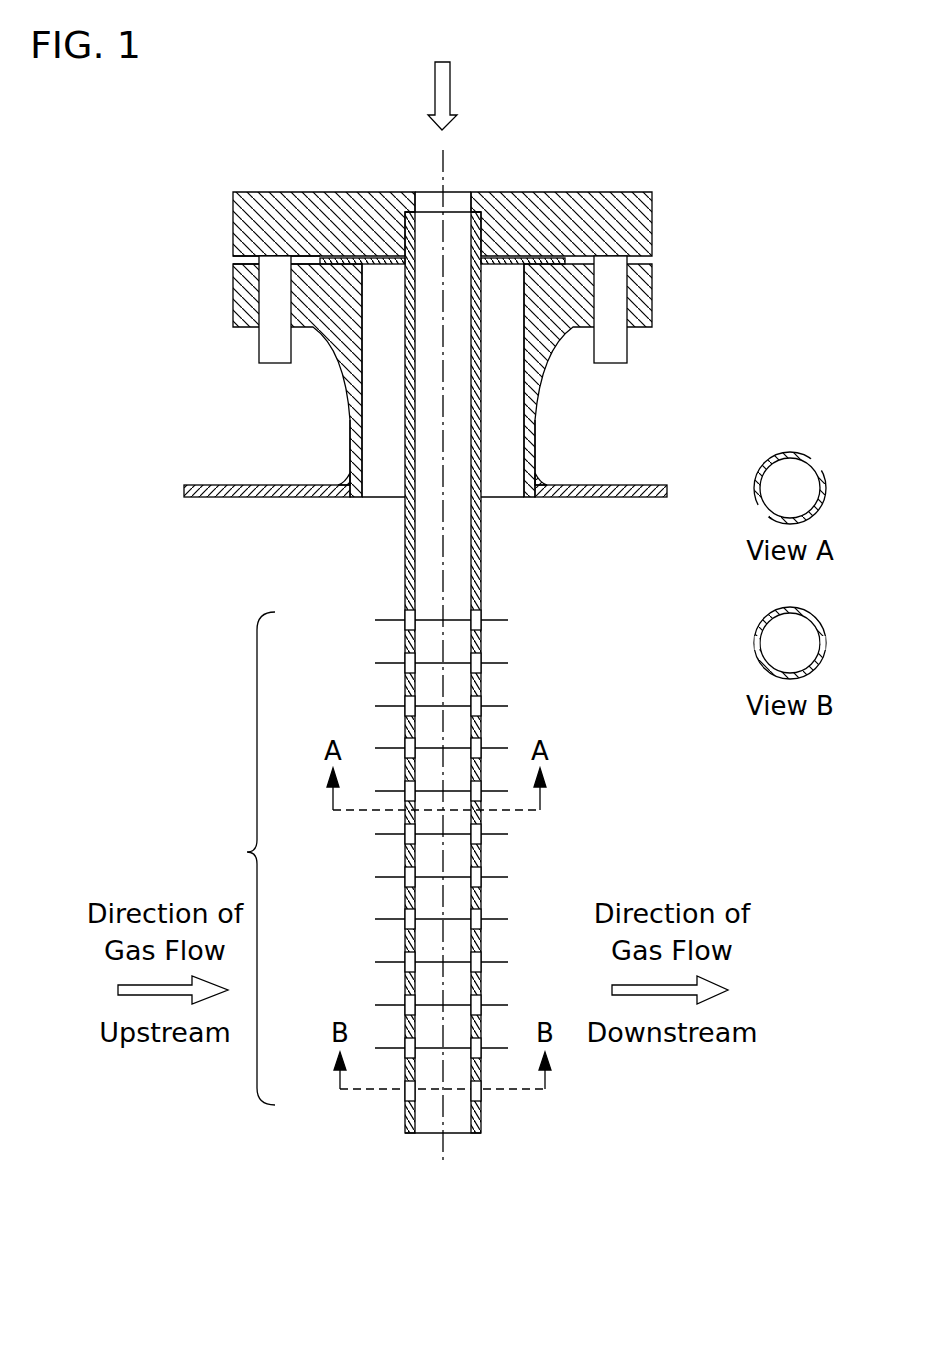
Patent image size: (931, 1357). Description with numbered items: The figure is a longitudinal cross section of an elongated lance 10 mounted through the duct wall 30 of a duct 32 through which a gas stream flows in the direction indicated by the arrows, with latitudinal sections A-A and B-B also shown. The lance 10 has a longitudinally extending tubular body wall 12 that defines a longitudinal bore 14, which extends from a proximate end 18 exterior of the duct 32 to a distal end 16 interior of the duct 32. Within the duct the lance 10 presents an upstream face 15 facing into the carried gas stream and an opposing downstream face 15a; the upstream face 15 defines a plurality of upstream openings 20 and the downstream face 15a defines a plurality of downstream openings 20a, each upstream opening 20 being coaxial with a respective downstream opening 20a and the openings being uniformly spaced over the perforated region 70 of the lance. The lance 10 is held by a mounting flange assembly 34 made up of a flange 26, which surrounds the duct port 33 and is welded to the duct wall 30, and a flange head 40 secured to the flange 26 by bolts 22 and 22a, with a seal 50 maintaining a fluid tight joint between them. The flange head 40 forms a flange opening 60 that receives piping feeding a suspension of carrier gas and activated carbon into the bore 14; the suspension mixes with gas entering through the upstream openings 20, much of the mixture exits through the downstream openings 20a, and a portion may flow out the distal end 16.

The elongated lance 10 is at (485, 590).
The tubular body wall 12 is at (481, 538).
The longitudinal bore 14 is at (458, 642).
The upstream face 15 is at (386, 683).
The downstream face 15a is at (497, 683).
The distal end 16 is at (404, 1118).
The proximate end 18 is at (404, 380).
The upstream openings 20 is at (405, 870).
The downstream openings 20a is at (481, 870).
The bolt 22 is at (611, 352).
The bolt 22a is at (270, 352).
The flange 26 is at (652, 290).
The duct wall 30 is at (627, 485).
The duct 32 is at (210, 568).
The duct port 33 is at (387, 500).
The mounting flange assembly 34 is at (215, 262).
The flange head 40 is at (652, 221).
The seal 50 is at (545, 258).
The flange opening 60 is at (455, 192).
The perforated region 70 is at (247, 852).